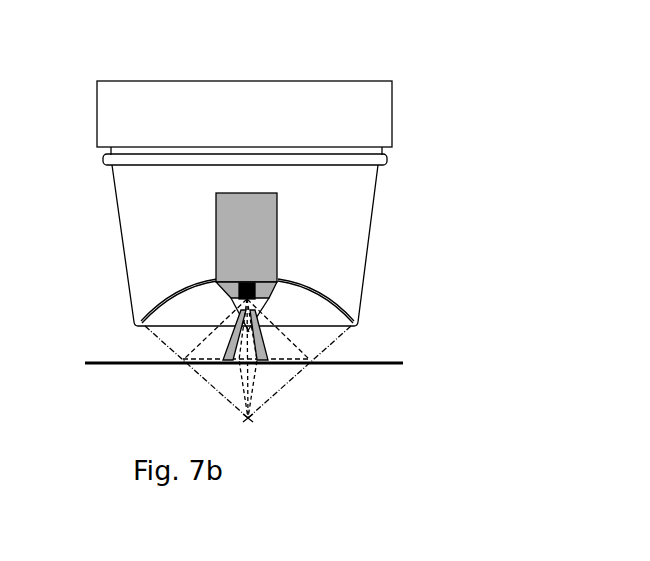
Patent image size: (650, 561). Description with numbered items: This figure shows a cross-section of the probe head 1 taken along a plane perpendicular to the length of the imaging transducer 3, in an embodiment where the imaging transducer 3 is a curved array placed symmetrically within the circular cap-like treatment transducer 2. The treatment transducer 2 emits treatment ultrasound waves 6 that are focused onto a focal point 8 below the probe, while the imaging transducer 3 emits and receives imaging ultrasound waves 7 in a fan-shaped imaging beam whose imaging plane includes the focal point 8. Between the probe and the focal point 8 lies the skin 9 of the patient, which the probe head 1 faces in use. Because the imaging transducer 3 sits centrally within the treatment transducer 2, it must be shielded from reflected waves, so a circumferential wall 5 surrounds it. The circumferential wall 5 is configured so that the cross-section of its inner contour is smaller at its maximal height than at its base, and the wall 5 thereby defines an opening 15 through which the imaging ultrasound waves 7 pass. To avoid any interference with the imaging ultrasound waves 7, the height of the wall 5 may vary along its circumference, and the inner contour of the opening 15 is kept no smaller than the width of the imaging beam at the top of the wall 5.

The probe head 1 is at (92, 36).
The treatment transducer 2 is at (331, 294).
The imaging transducer 3 is at (171, 297).
The circumferential wall 5 is at (205, 318).
The treatment ultrasound waves 6 is at (231, 402).
The imaging ultrasound waves 7 is at (335, 380).
The focal point 8 is at (251, 419).
The skin 9 is at (393, 365).
The opening 15 is at (237, 364).